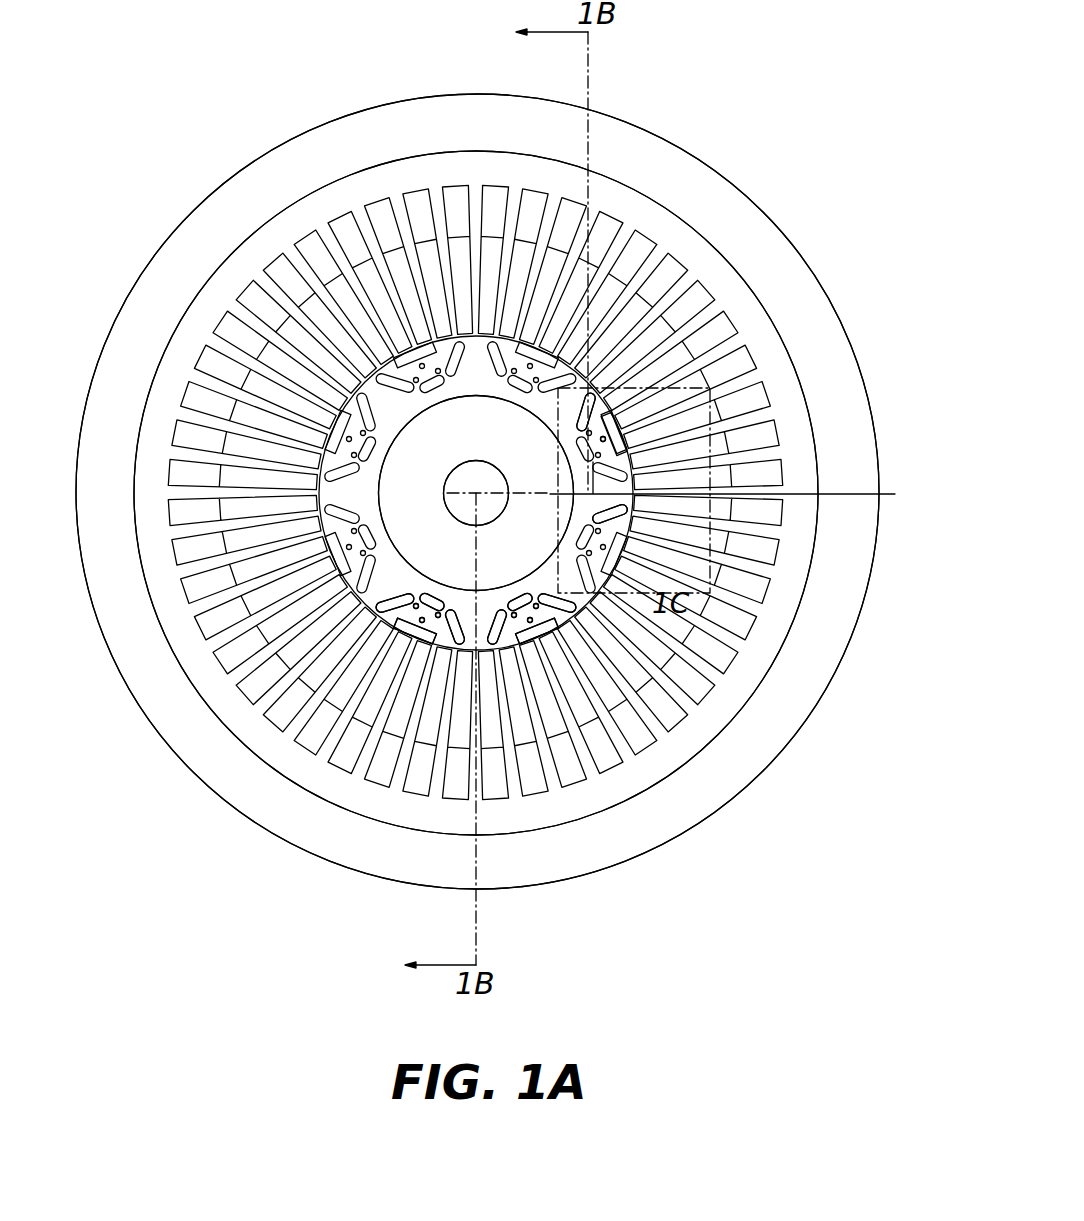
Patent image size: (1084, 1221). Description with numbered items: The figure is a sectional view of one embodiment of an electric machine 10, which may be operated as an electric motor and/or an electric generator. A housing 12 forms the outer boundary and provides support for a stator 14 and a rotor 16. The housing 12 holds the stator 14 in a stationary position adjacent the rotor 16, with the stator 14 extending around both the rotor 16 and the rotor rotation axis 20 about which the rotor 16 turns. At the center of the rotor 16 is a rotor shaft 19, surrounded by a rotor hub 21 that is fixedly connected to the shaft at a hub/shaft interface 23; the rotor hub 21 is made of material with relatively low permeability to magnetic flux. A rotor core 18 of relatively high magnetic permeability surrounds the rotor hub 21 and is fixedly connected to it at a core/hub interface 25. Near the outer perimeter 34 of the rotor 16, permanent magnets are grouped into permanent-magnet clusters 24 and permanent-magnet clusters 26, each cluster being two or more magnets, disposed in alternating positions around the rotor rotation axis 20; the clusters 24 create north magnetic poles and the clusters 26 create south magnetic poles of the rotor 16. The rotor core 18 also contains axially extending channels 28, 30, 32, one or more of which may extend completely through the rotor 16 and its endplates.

The electric machine 10 is at (788, 178).
The housing 12 is at (805, 290).
The stator 14 is at (531, 493).
The rotor 16 is at (602, 366).
The rotor core 18 is at (583, 622).
The rotor shaft 19 is at (453, 516).
The rotor rotation axis 20 is at (470, 492).
The rotor hub 21 is at (738, 485).
The hub/shaft interface 23 is at (500, 516).
The permanent-magnet clusters 24 is at (446, 410).
The core/hub interface 25 is at (445, 612).
The permanent-magnet clusters 26 is at (506, 410).
The axially extending channel 28 is at (614, 428).
The axially extending channel 30 is at (592, 396).
The axially extending channel 32 is at (603, 438).
The outer perimeter 34 is at (630, 511).